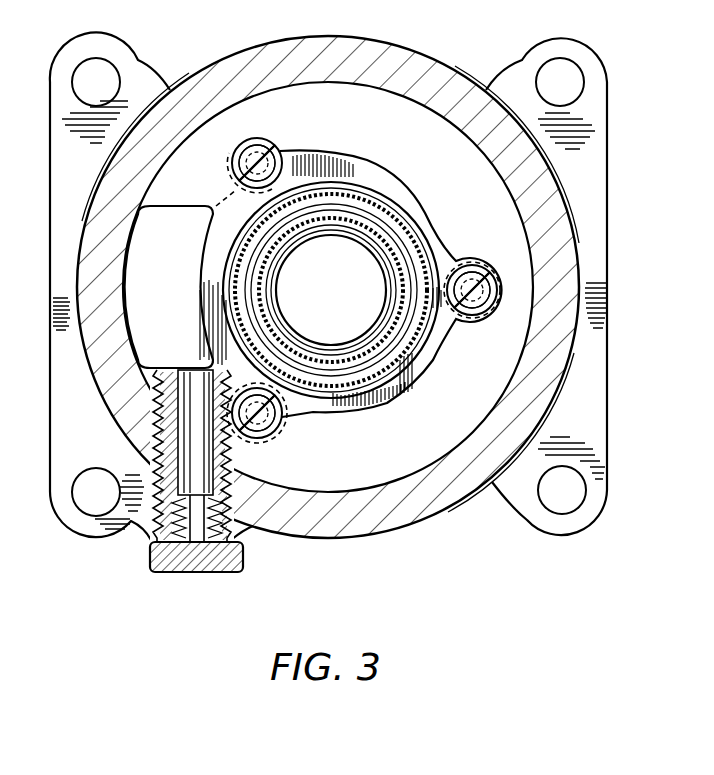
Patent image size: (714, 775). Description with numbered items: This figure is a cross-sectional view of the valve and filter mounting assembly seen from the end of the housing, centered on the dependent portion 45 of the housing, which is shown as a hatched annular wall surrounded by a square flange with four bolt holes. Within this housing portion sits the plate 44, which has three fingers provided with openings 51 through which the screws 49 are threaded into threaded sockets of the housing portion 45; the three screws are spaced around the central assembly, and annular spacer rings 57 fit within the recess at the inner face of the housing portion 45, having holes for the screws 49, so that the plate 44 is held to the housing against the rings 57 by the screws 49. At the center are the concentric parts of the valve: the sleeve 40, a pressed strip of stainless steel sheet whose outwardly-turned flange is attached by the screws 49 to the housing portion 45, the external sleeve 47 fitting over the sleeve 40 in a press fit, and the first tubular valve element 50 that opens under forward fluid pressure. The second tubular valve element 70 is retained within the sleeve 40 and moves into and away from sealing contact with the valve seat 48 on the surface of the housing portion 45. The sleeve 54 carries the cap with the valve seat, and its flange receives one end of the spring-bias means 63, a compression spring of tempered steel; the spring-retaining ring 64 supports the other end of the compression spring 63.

The sleeve 40 is at (230, 306).
The plate 44 is at (427, 216).
The dependent portion of the housing 45 is at (442, 85).
The external sleeve 47 is at (376, 192).
The valve seat 48 is at (260, 437).
The screws 49 is at (276, 422).
The first tubular valve element 50 is at (323, 357).
The openings 51 is at (238, 150).
The sleeve 54 is at (262, 321).
The annular spacer rings 57 is at (455, 247).
The spring-bias means 63 is at (248, 270).
The inner race 64 is at (372, 243).
The second tubular valve element 70 is at (397, 309).